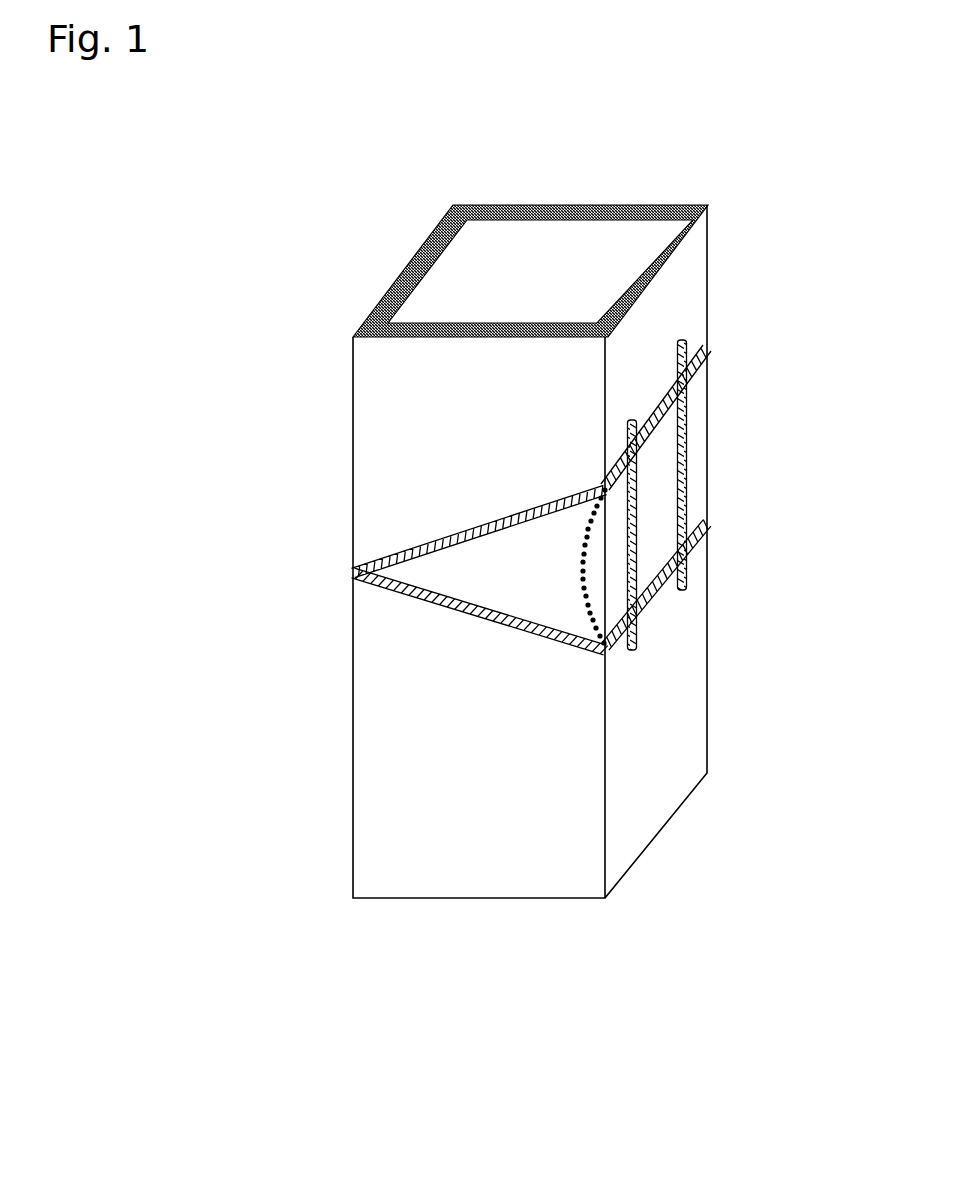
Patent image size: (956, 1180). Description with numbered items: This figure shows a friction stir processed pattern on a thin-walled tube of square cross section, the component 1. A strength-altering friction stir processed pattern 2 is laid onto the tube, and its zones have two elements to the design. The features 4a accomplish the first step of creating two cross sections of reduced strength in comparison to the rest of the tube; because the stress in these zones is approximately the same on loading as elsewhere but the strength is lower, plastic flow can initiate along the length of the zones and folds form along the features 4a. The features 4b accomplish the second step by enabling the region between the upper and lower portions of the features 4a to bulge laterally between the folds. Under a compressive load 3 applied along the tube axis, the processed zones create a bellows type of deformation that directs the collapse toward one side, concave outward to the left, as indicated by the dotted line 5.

The component 1 is at (398, 292).
The friction stir processed pattern 2 is at (737, 306).
The compressive load 3 is at (548, 280).
The first-step features 4a is at (425, 536).
The second-step features 4b is at (701, 573).
The dotted line 5 is at (583, 567).